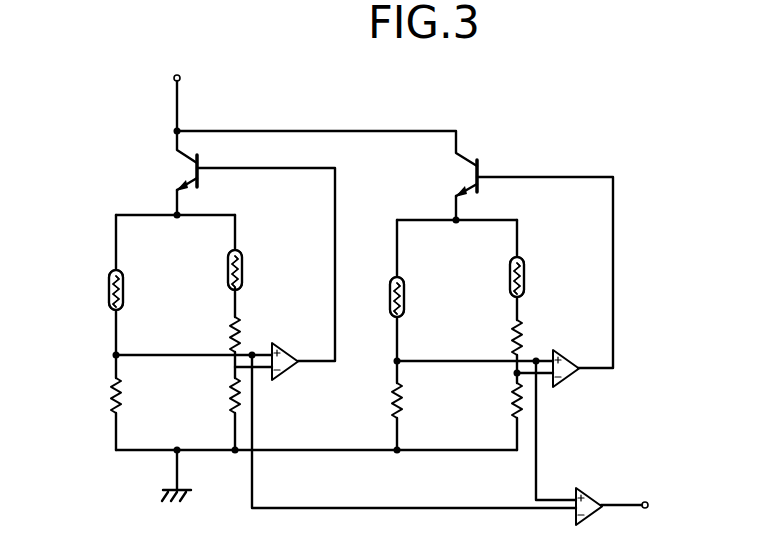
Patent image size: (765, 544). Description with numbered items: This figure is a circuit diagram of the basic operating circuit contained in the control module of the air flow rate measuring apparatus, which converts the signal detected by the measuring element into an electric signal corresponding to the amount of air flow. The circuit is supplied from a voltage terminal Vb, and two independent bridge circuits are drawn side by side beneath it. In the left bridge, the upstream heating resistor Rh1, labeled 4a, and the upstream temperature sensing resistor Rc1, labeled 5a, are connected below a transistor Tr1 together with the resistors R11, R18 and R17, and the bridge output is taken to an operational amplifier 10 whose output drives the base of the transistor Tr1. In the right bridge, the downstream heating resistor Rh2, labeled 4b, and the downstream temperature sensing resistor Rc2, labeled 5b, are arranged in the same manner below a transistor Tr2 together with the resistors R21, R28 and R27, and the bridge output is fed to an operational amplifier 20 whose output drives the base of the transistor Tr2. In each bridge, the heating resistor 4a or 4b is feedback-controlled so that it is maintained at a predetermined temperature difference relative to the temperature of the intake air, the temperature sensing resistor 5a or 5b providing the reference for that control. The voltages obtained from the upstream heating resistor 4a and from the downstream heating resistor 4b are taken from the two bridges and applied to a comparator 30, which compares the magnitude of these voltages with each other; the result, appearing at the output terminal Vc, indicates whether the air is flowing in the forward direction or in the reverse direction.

The supply voltage terminal Vb is at (191, 79).
The output voltage terminal Vc is at (644, 522).
The first transistor Tr1 is at (177, 185).
The second transistor Tr2 is at (456, 194).
The first heating resistor Rh1 is at (110, 280).
The upstream heating resistor 4a is at (85, 272).
The first temperature compensating resistor Rc1 is at (242, 270).
The temperature sensing resistor 5a is at (260, 261).
The resistor R18 is at (240, 332).
The resistor R11 is at (113, 397).
The resistor R17 is at (233, 397).
The first operational amplifier 10 is at (286, 378).
The second heating resistor Rh2 is at (403, 296).
The downstream heating resistor 4b is at (420, 287).
The second temperature compensating resistor Rc2 is at (523, 275).
The temperature sensing resistor 5b is at (542, 268).
The resistor R28 is at (514, 336).
The resistor R21 is at (403, 406).
The resistor R27 is at (514, 400).
The second operational amplifier 20 is at (566, 384).
The comparator 30 is at (592, 494).